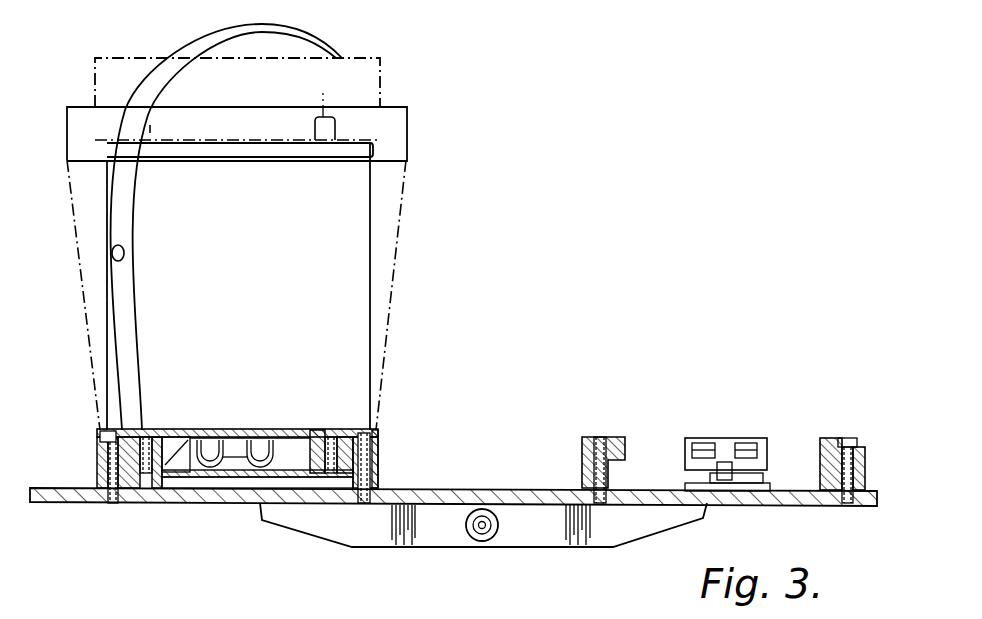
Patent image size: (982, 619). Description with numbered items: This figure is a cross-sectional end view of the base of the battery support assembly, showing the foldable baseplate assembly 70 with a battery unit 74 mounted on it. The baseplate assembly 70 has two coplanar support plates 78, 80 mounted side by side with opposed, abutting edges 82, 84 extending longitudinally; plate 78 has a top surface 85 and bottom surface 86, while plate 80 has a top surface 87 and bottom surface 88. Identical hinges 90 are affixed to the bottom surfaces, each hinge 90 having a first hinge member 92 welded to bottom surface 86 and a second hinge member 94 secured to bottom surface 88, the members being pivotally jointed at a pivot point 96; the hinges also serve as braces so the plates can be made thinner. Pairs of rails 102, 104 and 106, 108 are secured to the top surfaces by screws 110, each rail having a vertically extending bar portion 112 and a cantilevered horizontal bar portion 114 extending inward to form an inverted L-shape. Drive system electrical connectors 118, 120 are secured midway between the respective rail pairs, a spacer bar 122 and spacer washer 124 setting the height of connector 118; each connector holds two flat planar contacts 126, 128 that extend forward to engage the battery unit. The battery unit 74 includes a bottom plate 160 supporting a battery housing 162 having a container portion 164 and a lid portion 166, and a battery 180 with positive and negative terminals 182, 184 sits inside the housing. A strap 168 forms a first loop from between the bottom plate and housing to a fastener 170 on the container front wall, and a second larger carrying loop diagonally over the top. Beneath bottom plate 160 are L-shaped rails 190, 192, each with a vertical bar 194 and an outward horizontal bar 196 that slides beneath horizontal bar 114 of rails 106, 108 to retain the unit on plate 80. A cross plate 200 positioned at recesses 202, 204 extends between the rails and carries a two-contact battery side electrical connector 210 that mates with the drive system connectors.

The foldable baseplate assembly 70 is at (176, 524).
The battery unit 74 is at (407, 142).
The support plate 78 is at (795, 490).
The support plate 80 is at (400, 488).
The abutting edge 82 is at (568, 490).
The abutting edge 84 is at (555, 490).
The top surface 85 is at (877, 490).
The bottom surface 86 is at (823, 505).
The top surface 87 is at (55, 487).
The bottom surface 88 is at (246, 503).
The hinge 90 is at (446, 524).
The first hinge member 92 is at (570, 545).
The second hinge member 94 is at (354, 546).
The pivot point 96 is at (498, 543).
The rail 102 is at (867, 438).
The rail 104 is at (587, 437).
The rail 106 is at (380, 433).
The rail 108 is at (97, 440).
The screw 110 is at (110, 503).
The vertical bar portion 112 is at (612, 477).
The horizontal bar portion 114 is at (350, 428).
The drive system electrical connector 118 is at (712, 438).
The drive system electrical connector 120 is at (482, 532).
The spacer bar 122 is at (768, 506).
The spacer washer 124 is at (768, 470).
The contact 126 is at (753, 438).
The contact 128 is at (698, 438).
The bottom plate 160 is at (380, 426).
The battery housing 162 is at (395, 246).
The container portion 164 is at (402, 192).
The lid portion 166 is at (380, 92).
The strap 168 is at (130, 182).
The fastener 170 is at (126, 250).
The battery 180 is at (368, 222).
The positive terminal 182 is at (150, 128).
The negative terminal 184 is at (324, 96).
The L-shaped rail 190 is at (305, 430).
The L-shaped rail 192 is at (197, 430).
The vertical bar 194 is at (215, 440).
The horizontal bar 196 is at (140, 437).
The cross plate 200 is at (188, 505).
The recess 202 is at (380, 440).
The recess 204 is at (124, 503).
The battery side electrical connector 210 is at (273, 432).